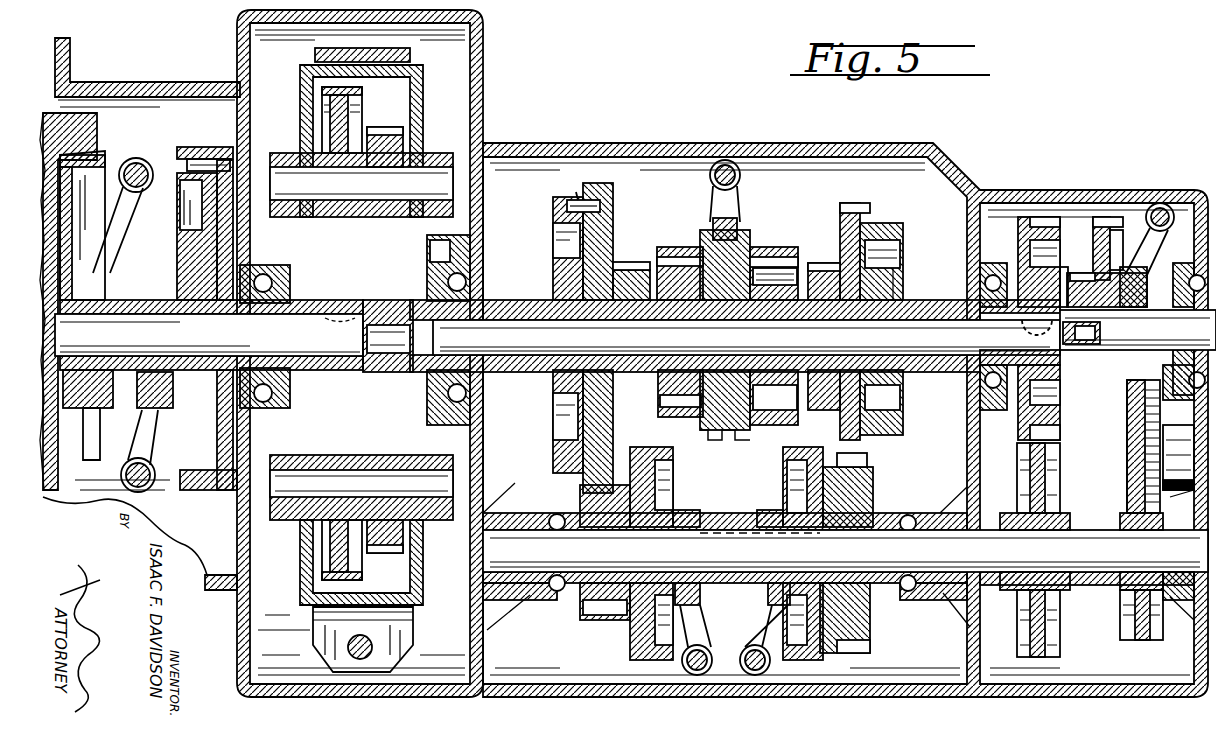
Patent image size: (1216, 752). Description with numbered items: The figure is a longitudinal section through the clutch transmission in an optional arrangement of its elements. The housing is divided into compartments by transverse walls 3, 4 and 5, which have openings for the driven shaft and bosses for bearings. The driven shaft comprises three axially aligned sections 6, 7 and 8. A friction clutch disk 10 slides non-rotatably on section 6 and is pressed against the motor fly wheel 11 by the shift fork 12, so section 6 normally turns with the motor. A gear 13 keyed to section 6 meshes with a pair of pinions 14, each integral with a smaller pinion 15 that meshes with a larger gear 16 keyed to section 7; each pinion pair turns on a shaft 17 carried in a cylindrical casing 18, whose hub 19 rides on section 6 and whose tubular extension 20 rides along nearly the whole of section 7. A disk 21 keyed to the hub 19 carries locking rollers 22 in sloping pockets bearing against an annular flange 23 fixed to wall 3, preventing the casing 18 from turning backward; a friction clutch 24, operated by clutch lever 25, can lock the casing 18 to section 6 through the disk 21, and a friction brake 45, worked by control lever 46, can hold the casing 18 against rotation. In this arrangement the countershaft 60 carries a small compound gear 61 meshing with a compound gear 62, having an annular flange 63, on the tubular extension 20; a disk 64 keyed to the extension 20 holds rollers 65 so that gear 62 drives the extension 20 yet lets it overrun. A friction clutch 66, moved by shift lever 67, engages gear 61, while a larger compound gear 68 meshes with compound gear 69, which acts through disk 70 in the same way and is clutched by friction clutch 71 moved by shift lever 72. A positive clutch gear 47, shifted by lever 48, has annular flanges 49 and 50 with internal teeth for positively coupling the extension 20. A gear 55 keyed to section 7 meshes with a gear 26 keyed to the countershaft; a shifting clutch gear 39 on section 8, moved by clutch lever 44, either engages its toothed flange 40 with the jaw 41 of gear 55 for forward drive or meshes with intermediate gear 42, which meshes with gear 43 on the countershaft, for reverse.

The transverse wall 3 is at (250, 118).
The transverse wall 4 is at (487, 486).
The transverse wall 5 is at (975, 492).
The first section of the driven shaft 6 is at (209, 335).
The second section of the driven shaft 7 is at (746, 337).
The third section of the driven shaft 8 is at (1138, 329).
The friction clutch disk 10 is at (82, 225).
The fly wheel 11 is at (96, 131).
The shift fork 12 is at (143, 203).
The gear 13 is at (338, 303).
The pinion 14 is at (362, 112).
The smaller pinion 15 is at (403, 140).
The larger gear 16 is at (427, 252).
The shaft 17 is at (361, 336).
The cylindrical casing 18 is at (426, 103).
The hub 19 is at (270, 303).
The tubular extension 20 is at (440, 320).
The disk 21 is at (233, 228).
The locking rollers 22 is at (207, 160).
The annular flange 23 is at (196, 147).
The friction clutch 24 is at (207, 325).
The clutch lever 25 is at (154, 450).
The gear 26 is at (1055, 487).
The shifting clutch gear 39 is at (1120, 213).
The cylindrical extension 40 is at (1085, 395).
The jaw 41 is at (1060, 270).
The intermediate gear 42 is at (1140, 445).
The gear 43 is at (1133, 612).
The clutch lever 44 is at (1147, 255).
The friction brake 45 is at (412, 55).
The control lever 46 is at (372, 647).
The positive clutch gear 47 is at (745, 245).
The shift lever 48 is at (740, 187).
The annular flange 49 is at (676, 248).
The annular flange 50 is at (783, 250).
The gear 55 is at (1030, 228).
The countershaft 60 is at (845, 556).
The small compound gear 61 is at (605, 552).
The compound gear 62 is at (606, 244).
The annular flange 63 is at (576, 192).
The disk 64 is at (553, 213).
The rollers 65 is at (580, 200).
The friction clutch 66 is at (665, 497).
The shift lever 67 is at (698, 623).
The compound gear 68 is at (870, 608).
The compound gear 69 is at (865, 212).
The disk 70 is at (905, 250).
The friction clutch 71 is at (800, 497).
The shift lever 72 is at (770, 612).